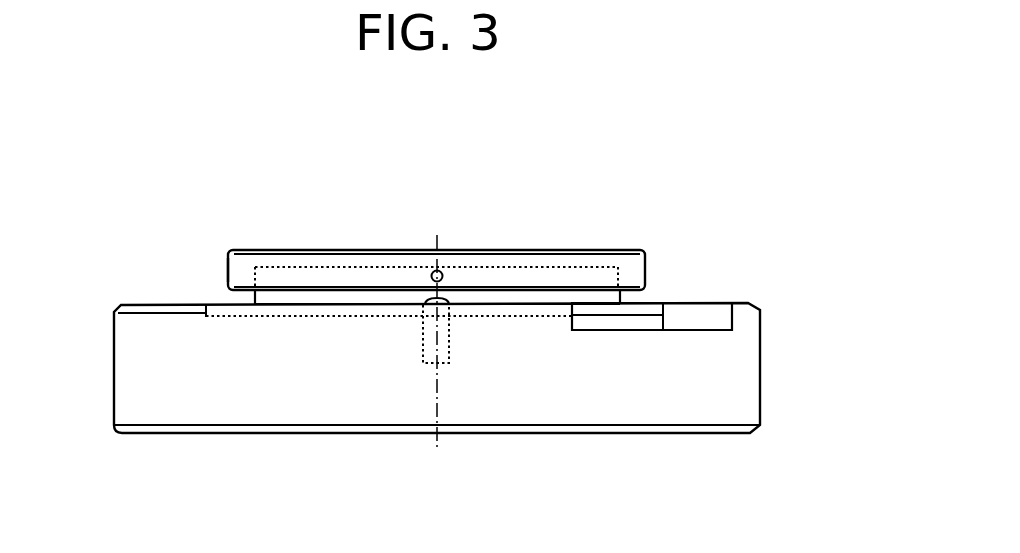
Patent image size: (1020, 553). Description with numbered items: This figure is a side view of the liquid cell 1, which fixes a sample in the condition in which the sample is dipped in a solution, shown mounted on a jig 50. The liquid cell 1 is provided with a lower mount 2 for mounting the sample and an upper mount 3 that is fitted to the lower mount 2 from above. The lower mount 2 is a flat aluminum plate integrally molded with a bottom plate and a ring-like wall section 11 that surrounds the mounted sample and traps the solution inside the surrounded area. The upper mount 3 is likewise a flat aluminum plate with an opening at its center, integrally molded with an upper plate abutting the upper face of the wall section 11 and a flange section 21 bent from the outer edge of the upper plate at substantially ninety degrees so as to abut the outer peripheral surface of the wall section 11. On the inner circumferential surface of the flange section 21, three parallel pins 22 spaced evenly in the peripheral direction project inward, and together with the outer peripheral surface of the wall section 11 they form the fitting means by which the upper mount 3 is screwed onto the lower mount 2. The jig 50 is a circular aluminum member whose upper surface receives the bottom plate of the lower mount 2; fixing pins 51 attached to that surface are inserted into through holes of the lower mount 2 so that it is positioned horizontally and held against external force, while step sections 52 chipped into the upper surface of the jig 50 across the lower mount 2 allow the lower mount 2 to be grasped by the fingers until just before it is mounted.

The liquid cell 1 is at (681, 117).
The lower mount 2 is at (621, 298).
The upper mount 3 is at (645, 251).
The wall section 11 is at (255, 302).
The flange section 21 is at (232, 266).
The parallel pins 22 is at (431, 276).
The jig 50 is at (761, 335).
The fixing pins 51 is at (449, 342).
The step sections 52 is at (710, 328).